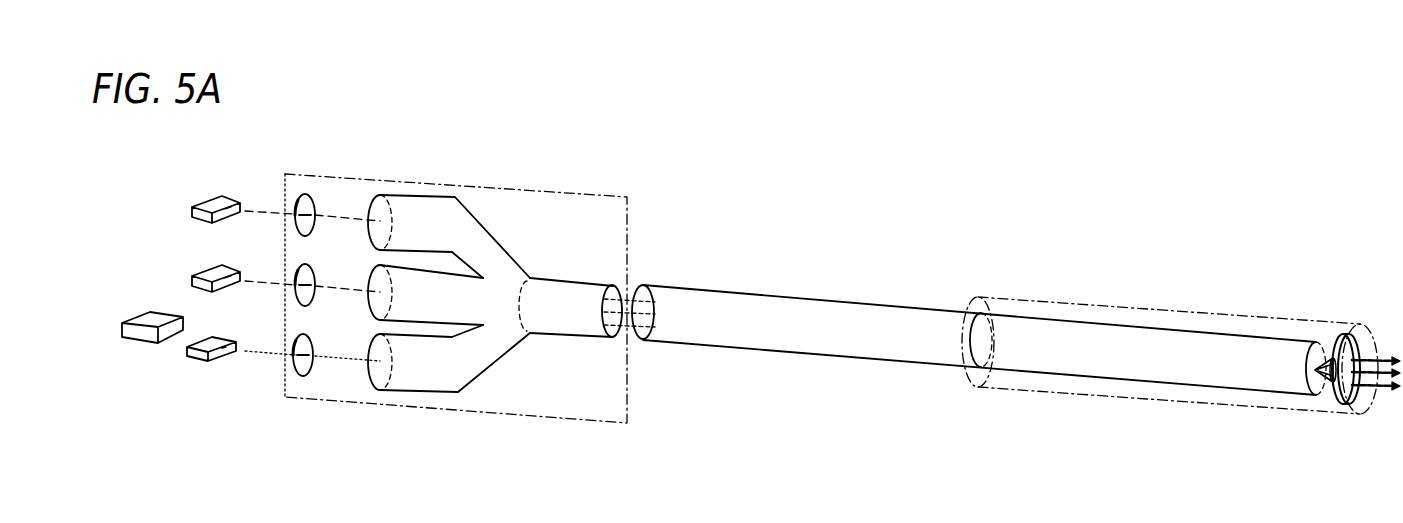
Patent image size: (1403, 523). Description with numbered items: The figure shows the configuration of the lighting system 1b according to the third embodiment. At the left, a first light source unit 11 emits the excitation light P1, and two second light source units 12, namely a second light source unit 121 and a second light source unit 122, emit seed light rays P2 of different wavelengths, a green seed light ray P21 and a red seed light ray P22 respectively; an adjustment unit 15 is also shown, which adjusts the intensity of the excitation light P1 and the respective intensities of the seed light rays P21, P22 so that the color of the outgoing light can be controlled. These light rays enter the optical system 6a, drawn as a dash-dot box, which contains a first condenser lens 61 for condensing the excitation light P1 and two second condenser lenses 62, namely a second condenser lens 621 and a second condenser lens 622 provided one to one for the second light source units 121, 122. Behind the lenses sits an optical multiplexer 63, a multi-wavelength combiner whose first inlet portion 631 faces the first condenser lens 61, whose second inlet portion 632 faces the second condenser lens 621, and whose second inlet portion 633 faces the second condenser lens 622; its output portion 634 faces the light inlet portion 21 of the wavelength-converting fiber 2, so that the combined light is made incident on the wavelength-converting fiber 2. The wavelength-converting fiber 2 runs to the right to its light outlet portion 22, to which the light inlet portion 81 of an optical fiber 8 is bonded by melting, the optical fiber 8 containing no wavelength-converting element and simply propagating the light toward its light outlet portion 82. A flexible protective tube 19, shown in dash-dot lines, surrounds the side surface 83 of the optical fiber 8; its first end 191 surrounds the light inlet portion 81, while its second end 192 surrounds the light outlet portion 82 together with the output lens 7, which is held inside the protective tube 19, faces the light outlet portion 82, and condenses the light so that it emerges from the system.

The lighting system 1b is at (1122, 252).
The wavelength-converting fiber 2 is at (986, 353).
The optical system 6a is at (583, 422).
The output lens 7 is at (1353, 343).
The optical fiber 8 is at (1164, 342).
The first light source unit 11 is at (205, 356).
The second light source unit 12 is at (184, 226).
The second light source unit 121 is at (212, 202).
The second light source unit 122 is at (214, 269).
The adjustment unit 15 is at (140, 333).
The protective tube 19 is at (1164, 342).
The first end 191 is at (985, 297).
The second end 192 is at (1356, 328).
The light inlet portion 21 is at (634, 341).
The light outlet portion 22 is at (985, 322).
The first condenser lens 61 is at (303, 380).
The second condenser lens 62 is at (339, 306).
The second condenser lens 621 is at (308, 198).
The second condenser lens 622 is at (305, 306).
The optical multiplexer 63 is at (467, 318).
The first inlet portion 631 is at (378, 372).
The second inlet portion 632 is at (372, 232).
The second inlet portion 633 is at (372, 305).
The output portion 634 is at (612, 292).
The light inlet portion 81 is at (978, 385).
The light outlet portion 82 is at (1317, 389).
The side surface 83 is at (1147, 373).
The excitation light P1 is at (246, 354).
The seed light ray P2 is at (284, 228).
The seed light ray P21 is at (260, 210).
The seed light ray P22 is at (262, 283).